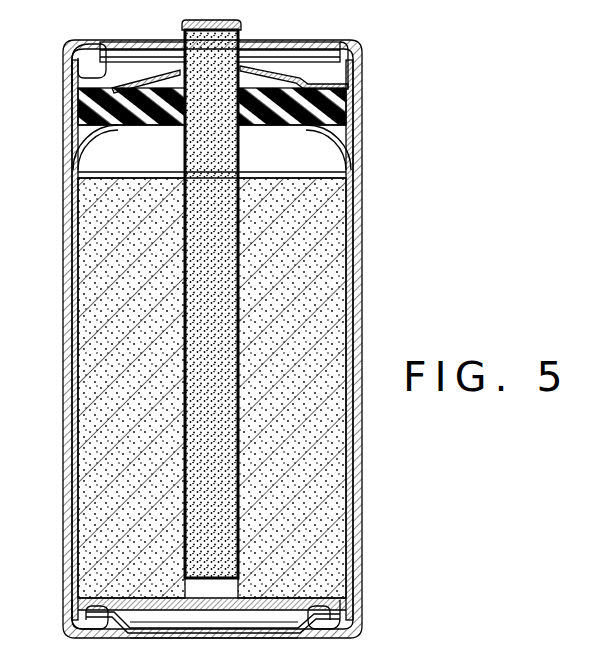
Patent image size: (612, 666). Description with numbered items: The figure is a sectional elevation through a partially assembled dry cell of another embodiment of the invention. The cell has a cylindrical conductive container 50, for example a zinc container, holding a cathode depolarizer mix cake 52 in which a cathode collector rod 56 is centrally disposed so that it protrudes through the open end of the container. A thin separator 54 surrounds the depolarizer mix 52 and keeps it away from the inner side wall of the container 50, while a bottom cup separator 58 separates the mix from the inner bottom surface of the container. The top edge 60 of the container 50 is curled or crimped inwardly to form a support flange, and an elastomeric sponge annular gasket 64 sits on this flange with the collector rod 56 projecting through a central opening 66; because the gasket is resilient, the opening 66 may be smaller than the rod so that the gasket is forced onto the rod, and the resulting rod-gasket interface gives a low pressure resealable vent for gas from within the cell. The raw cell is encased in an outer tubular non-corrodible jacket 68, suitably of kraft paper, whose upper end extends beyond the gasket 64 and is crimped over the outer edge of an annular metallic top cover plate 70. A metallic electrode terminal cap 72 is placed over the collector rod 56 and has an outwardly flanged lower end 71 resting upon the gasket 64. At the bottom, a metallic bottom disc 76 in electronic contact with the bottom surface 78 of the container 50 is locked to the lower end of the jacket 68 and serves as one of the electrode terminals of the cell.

The cylindrical conductive container 50 is at (361, 331).
The cathode depolarizer mix cake 52 is at (326, 248).
The thin separator 54 is at (345, 178).
The cathode collector rod 56 is at (240, 151).
The bottom cup separator 58 is at (86, 600).
The top edge of container 60 is at (172, 90).
The elastomeric sponge annular gasket 64 is at (347, 101).
The opening 66 is at (247, 80).
The outer tubular non-corrodible jacket 68 is at (355, 281).
The annular metallic top cover plate 70 is at (123, 68).
The outwardly flanged lower end 71 is at (146, 120).
The metallic electrode terminal cap 72 is at (242, 24).
The metallic bottom disc 76 is at (298, 640).
The bottom surface of conductive container 78 is at (194, 642).